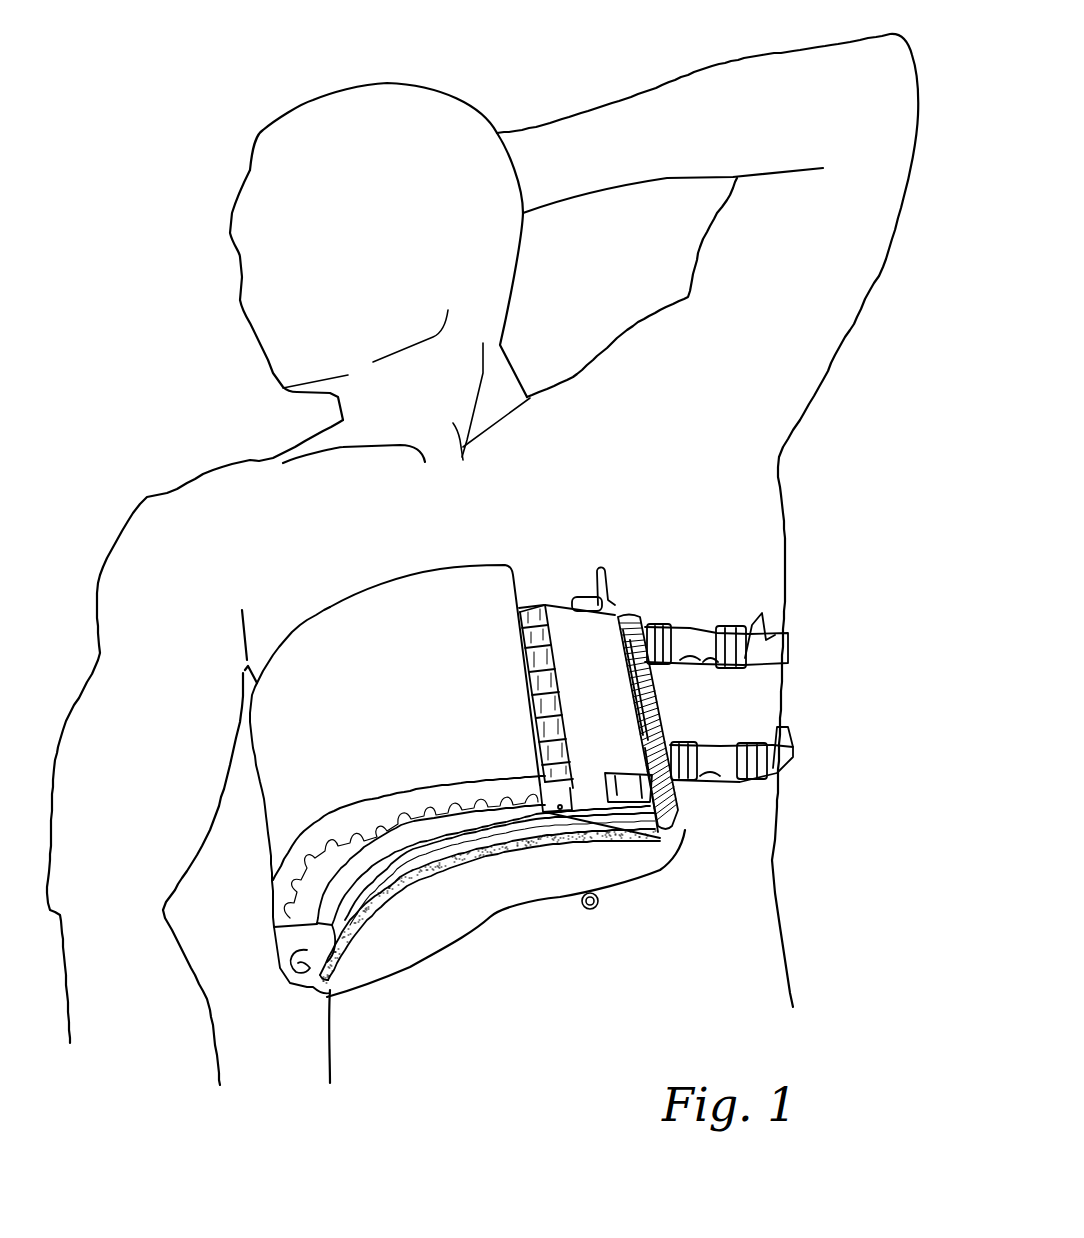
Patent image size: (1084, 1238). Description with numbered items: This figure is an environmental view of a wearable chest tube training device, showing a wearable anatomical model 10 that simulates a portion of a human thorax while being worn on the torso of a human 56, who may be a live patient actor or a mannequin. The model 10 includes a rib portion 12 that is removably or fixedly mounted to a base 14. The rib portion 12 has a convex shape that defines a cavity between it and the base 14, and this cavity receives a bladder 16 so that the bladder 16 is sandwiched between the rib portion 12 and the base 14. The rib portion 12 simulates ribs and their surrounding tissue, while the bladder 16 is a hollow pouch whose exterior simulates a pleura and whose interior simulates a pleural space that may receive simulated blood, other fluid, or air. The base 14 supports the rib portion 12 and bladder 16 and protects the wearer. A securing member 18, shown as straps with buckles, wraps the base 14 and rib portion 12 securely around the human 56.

The model 10 is at (545, 721).
The rib portion 12 is at (336, 595).
The base 14 is at (491, 916).
The bladder 16 is at (278, 817).
The securing member 18 is at (790, 633).
The human 56 is at (848, 313).